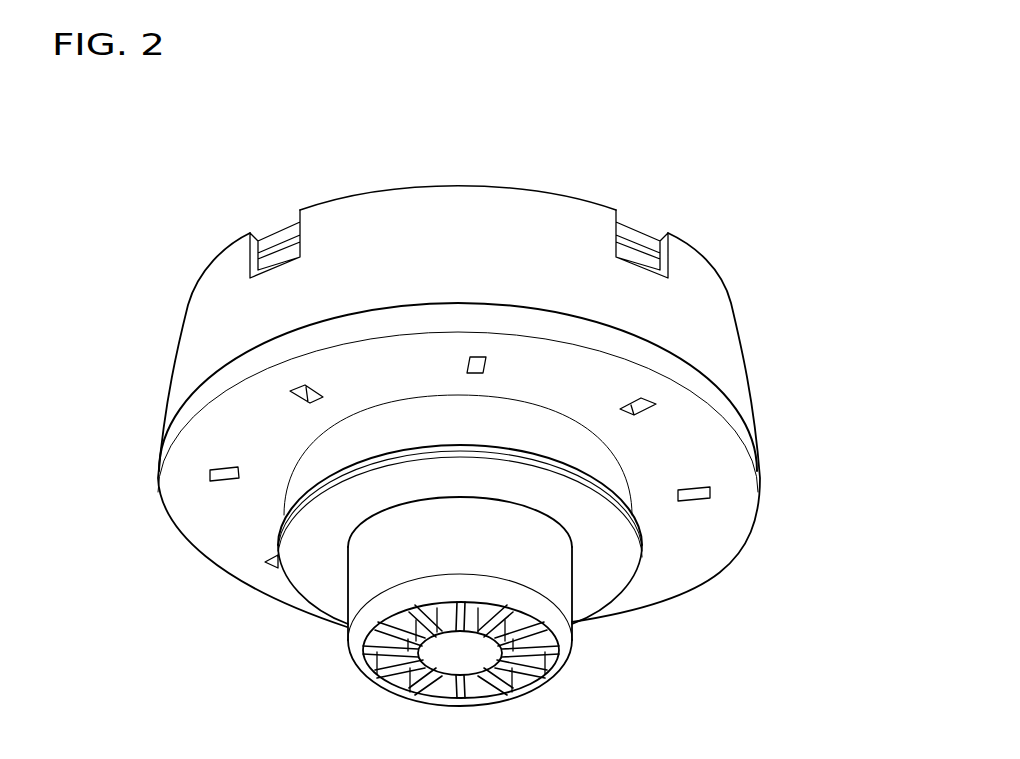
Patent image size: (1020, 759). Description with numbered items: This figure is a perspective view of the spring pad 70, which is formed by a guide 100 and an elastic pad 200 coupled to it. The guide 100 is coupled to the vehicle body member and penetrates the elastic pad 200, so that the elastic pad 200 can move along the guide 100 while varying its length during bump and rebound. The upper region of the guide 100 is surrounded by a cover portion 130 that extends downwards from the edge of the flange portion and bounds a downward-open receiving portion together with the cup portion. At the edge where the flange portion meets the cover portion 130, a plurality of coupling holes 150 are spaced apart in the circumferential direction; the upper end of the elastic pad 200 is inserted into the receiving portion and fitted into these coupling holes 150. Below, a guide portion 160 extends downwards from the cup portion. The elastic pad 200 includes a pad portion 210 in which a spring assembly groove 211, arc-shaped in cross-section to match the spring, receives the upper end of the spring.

The spring pad 70 is at (162, 372).
The guide 100 is at (705, 337).
The cover portion 130 is at (495, 205).
The coupling holes 150 is at (273, 252).
The guide portion 160 is at (368, 573).
The elastic pad 200 is at (607, 572).
The pad portion 210 is at (311, 558).
The spring assembly groove 211 is at (480, 448).